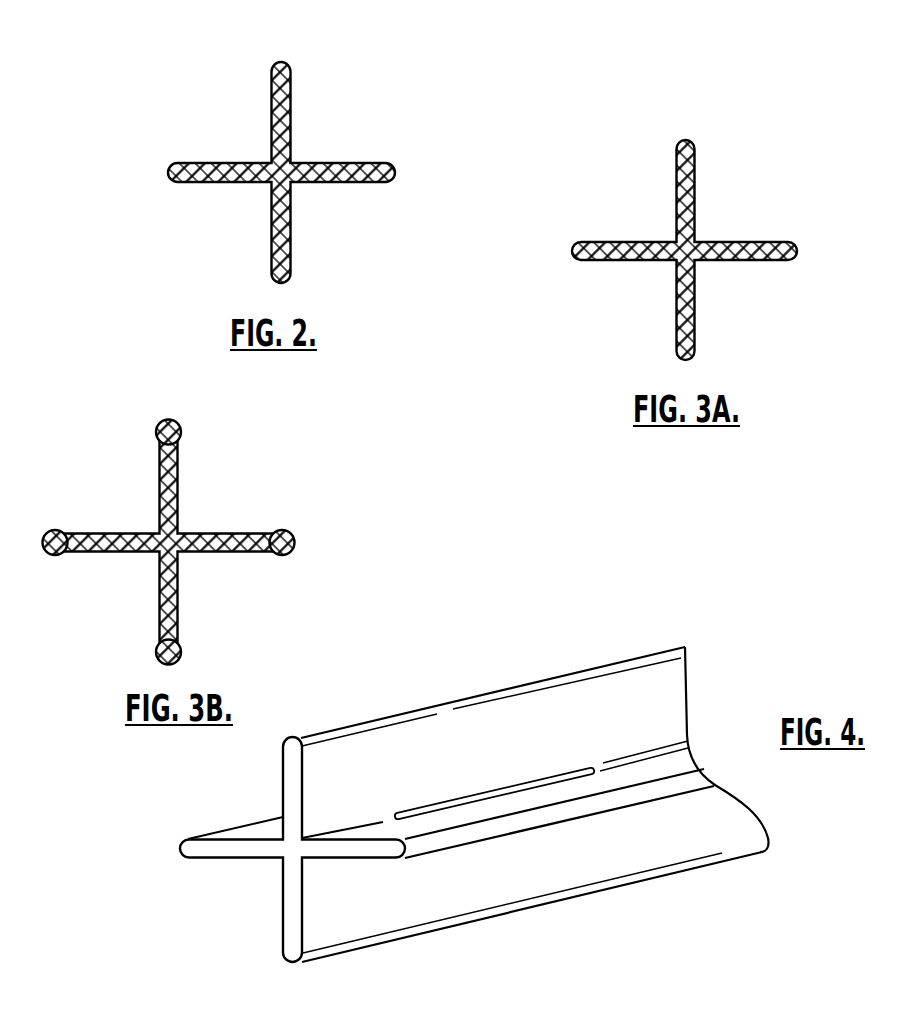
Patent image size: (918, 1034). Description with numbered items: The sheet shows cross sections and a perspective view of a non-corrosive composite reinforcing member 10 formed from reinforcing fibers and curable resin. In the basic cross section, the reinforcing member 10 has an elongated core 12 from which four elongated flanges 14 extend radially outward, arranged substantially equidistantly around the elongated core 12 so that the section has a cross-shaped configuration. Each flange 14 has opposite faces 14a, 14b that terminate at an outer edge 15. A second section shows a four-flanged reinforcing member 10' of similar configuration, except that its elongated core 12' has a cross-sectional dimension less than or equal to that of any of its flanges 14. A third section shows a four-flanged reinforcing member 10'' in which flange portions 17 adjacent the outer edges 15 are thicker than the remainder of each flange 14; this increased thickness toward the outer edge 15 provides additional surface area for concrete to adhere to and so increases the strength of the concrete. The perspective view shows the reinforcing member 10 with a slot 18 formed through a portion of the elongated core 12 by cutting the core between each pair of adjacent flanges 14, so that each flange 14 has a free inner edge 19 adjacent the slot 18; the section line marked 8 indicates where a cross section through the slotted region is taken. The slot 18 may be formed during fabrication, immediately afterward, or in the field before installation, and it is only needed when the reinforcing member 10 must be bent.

In FIG. 2, the reinforcing member 10 is at (276, 172).
In FIG. 4, the reinforcing member 10 is at (478, 789).
In FIG. 3A, the four-flanged reinforcing member 10' is at (679, 250).
In FIG. 3B, the four-flanged reinforcing member 10'' is at (168, 542).
In FIG. 2, the elongated core 12 is at (311, 156).
In FIG. 3B, the elongated core 12 is at (195, 518).
In FIG. 4, the elongated core 12 is at (264, 880).
In FIG. 3A, the elongated core 12' is at (716, 235).
In FIG. 2, the flange 14 is at (291, 129).
In FIG. 3A, the flange 14 is at (695, 208).
In FIG. 3B, the flange 14 is at (178, 470).
In FIG. 4, the flange 14 is at (570, 692).
In FIG. 2, the flange face 14a is at (291, 108).
In FIG. 3A, the flange face 14a is at (695, 186).
In FIG. 2, the flange face 14b is at (272, 105).
In FIG. 3A, the flange face 14b is at (677, 183).
In FIG. 2, the outer edge 15 is at (285, 62).
In FIG. 3A, the outer edge 15 is at (689, 141).
In FIG. 3B, the outer edge 15 is at (160, 422).
In FIG. 3B, the flange portion 17 is at (178, 424).
In FIG. 4, the slot 18 is at (548, 781).
In FIG. 4, the free inner edge 19 is at (420, 808).
In FIG. 4, the section line 8- 8 is at (405, 703).